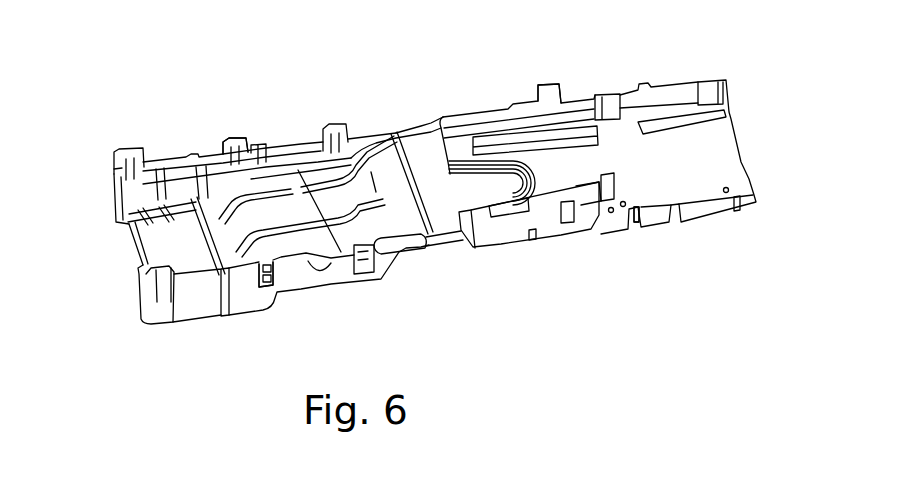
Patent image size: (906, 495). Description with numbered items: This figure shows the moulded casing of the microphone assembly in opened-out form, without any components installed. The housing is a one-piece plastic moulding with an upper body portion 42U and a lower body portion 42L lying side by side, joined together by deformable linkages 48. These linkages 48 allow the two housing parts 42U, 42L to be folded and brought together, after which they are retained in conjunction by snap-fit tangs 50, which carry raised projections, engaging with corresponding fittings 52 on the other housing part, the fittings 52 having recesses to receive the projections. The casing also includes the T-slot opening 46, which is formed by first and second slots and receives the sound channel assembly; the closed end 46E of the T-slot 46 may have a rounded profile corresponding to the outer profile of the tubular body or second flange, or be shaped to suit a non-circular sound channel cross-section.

The upper body portion 42U is at (172, 240).
The lower body portion 42L is at (715, 148).
The T-slot opening 46 is at (467, 187).
The closed end of the T-slot 46E is at (545, 187).
The deformable linkages 48 is at (420, 136).
The snap-fit tangs 50 is at (606, 94).
The fittings 52 is at (235, 136).